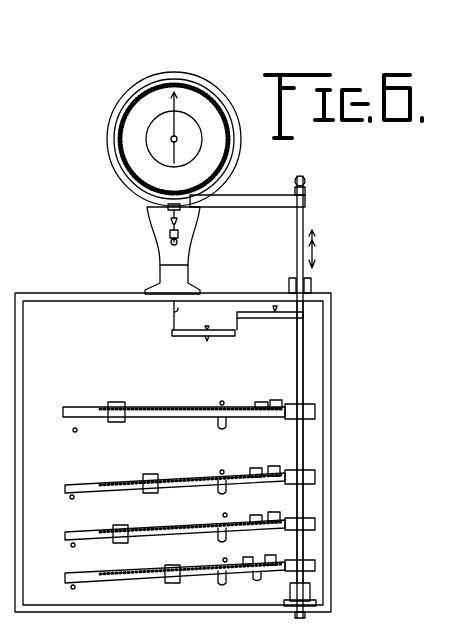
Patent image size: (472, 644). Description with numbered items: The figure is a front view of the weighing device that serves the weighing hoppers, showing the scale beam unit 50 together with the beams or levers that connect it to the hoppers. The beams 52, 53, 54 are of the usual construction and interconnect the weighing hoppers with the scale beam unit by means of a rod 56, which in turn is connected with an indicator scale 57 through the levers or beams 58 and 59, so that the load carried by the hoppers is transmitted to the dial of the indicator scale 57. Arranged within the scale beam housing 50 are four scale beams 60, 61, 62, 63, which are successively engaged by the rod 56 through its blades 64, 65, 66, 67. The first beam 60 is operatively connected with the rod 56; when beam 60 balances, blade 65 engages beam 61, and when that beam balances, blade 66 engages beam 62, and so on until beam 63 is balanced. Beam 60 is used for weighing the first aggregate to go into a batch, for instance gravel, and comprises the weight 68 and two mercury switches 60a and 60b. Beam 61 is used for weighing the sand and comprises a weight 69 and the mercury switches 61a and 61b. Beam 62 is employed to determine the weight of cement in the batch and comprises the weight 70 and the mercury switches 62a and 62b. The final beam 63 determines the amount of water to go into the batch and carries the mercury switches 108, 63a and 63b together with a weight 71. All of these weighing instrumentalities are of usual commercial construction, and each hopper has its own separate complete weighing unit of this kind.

The scale beam unit 50 is at (333, 370).
The beam 52 is at (182, 237).
The beam 53 is at (255, 195).
The beam 54 is at (305, 176).
The rod 56 is at (303, 340).
The indicator scale 57 is at (207, 82).
The lever 58 is at (195, 337).
The lever 59 is at (263, 318).
The scale beam 60 is at (156, 407).
The mercury switch 60a is at (258, 402).
The mercury switch 60b is at (276, 400).
The scale beam 61 is at (190, 480).
The mercury switch 61a is at (253, 468).
The mercury switch 61b is at (274, 466).
The scale beam 62 is at (190, 528).
The mercury switch 62a is at (256, 515).
The mercury switch 62b is at (278, 508).
The scale beam 63 is at (138, 583).
The mercury switch 63a is at (248, 557).
The mercury switch 63b is at (275, 551).
The blade 64 is at (315, 402).
The blade 65 is at (302, 468).
The blade 66 is at (302, 512).
The blade 67 is at (312, 549).
The weight 68 is at (116, 402).
The weight 69 is at (150, 474).
The weight 70 is at (120, 525).
The weight 71 is at (172, 565).
The mercury switch 108 is at (257, 580).